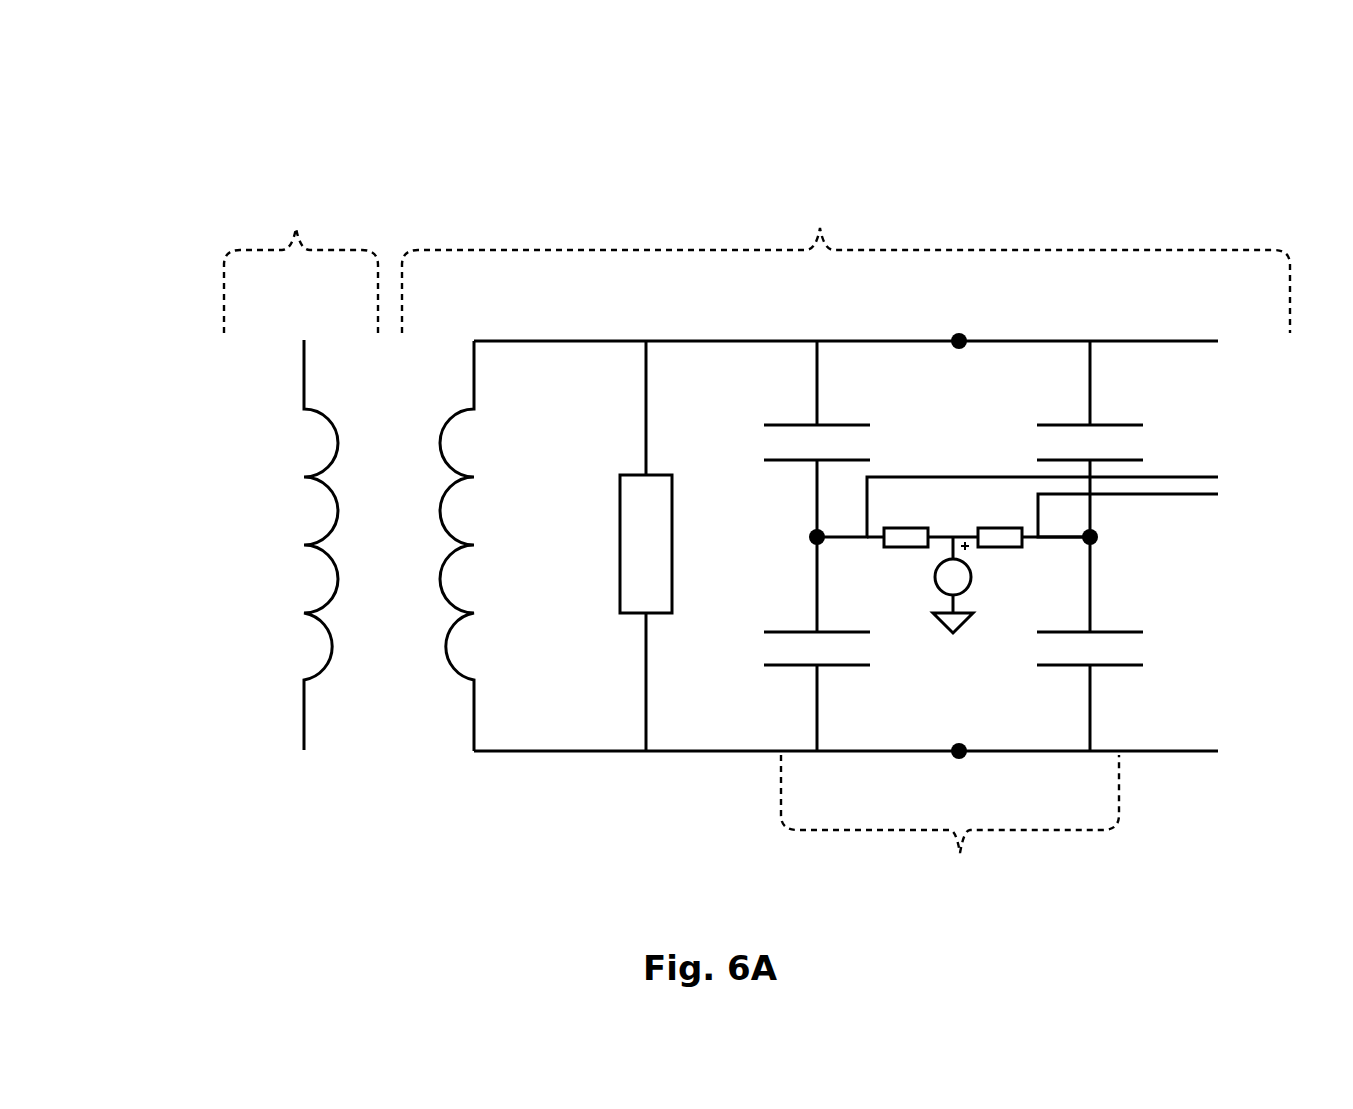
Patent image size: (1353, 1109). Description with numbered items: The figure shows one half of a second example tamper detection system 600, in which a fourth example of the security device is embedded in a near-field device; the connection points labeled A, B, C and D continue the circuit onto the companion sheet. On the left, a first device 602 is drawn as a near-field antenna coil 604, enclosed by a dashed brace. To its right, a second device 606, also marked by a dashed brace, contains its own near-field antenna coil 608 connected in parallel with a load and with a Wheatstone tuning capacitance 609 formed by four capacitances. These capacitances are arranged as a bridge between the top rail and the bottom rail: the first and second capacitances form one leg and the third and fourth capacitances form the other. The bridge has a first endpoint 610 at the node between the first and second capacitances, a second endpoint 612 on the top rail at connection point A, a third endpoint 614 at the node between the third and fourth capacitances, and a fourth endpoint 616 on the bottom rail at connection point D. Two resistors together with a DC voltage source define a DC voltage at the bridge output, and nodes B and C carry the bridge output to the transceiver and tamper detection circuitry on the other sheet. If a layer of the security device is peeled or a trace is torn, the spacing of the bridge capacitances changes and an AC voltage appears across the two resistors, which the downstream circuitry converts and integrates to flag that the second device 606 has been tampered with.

The tamper detection system 600 is at (180, 138).
The first device 602 is at (301, 474).
The near-field antenna coil 604 is at (308, 545).
The second device 606 is at (858, 545).
The near-field antenna coil 608 is at (467, 546).
The Wheatstone tuning capacitance 609 is at (846, 819).
The first endpoint 610 is at (800, 516).
The second endpoint 612 is at (935, 331).
The third endpoint 614 is at (1114, 548).
The fourth endpoint 616 is at (982, 764).